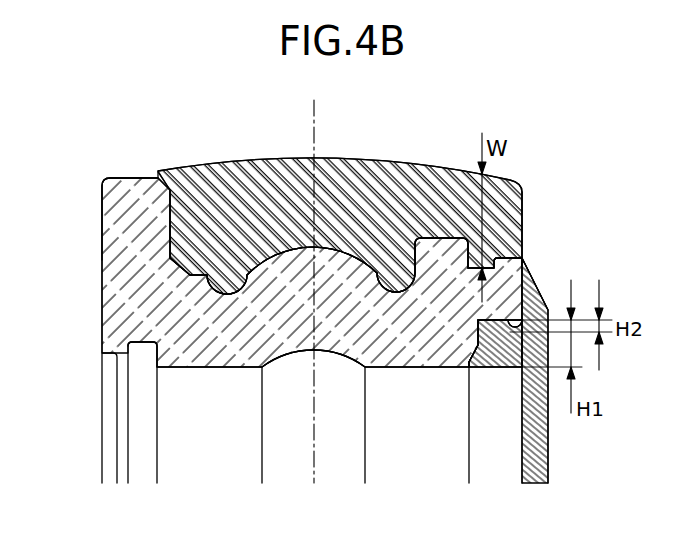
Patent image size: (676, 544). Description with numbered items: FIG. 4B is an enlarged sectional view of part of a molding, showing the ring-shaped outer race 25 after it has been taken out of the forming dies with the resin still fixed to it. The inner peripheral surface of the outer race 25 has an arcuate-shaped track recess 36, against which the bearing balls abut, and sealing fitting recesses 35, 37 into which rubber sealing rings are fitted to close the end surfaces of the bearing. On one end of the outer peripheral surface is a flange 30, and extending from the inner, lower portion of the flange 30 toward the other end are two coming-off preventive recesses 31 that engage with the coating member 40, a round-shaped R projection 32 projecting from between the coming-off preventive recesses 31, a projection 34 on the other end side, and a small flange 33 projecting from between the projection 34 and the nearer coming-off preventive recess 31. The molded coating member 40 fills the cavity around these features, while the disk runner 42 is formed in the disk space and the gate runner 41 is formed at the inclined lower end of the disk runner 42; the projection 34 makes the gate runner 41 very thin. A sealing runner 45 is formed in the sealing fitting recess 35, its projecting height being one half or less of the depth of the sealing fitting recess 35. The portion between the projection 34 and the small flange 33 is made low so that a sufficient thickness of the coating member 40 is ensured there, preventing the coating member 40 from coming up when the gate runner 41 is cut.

The outer race 25 is at (122, 300).
The flange 30 is at (138, 182).
The coming-off preventive recesses 31 is at (223, 294).
The R projection 32 is at (349, 257).
The small flange 33 is at (436, 244).
The projection 34 is at (512, 258).
The sealing fitting recess 35 is at (489, 322).
The track recess 36 is at (287, 353).
The sealing fitting recess 37 is at (143, 341).
The coating member 40 is at (217, 170).
The gate runner 41 is at (523, 258).
The disk runner 42 is at (540, 447).
The sealing runner 45 is at (503, 357).